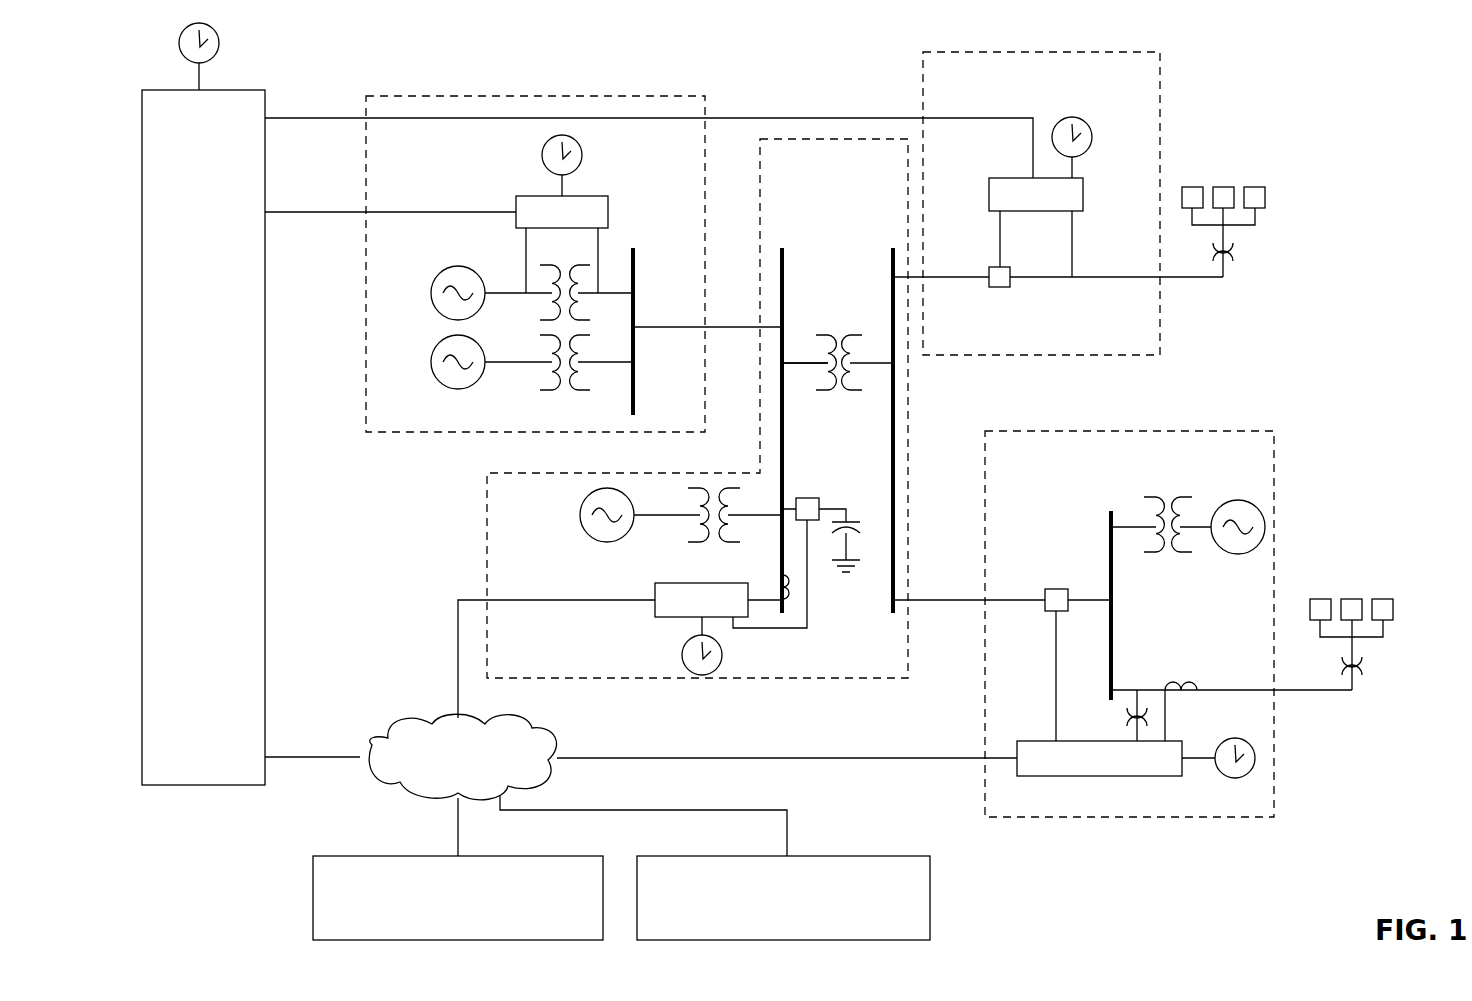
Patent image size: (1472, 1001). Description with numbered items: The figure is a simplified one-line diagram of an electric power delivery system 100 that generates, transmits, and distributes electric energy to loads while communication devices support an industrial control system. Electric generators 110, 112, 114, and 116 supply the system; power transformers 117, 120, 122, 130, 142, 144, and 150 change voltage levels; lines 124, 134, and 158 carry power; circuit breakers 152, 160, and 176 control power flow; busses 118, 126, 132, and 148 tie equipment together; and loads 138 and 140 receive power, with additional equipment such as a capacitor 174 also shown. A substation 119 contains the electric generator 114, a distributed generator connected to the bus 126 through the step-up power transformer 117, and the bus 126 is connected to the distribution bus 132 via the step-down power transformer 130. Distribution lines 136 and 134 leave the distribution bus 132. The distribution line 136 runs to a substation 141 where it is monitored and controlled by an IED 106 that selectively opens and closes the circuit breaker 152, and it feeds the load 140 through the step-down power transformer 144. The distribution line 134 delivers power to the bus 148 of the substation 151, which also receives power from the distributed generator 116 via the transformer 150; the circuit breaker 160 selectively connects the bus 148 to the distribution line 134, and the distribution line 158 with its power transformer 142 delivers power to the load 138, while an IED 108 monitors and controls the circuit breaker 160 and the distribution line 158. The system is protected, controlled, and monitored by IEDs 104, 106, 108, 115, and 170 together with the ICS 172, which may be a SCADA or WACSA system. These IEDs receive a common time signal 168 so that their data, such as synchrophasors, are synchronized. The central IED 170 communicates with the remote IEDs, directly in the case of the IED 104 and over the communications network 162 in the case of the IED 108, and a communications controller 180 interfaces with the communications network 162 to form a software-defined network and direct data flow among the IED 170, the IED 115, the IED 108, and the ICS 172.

The electric power delivery system 100 is at (1275, 109).
The IED 104 is at (527, 196).
The IED 106 is at (1003, 178).
The IED 108 is at (1135, 777).
The electric generator 110 is at (440, 272).
The electric generator 112 is at (440, 342).
The electric generator 114 is at (582, 517).
The IED 115 is at (701, 583).
The distributed generator 116 is at (1228, 554).
The power transformer 117 is at (698, 533).
The bus 118 is at (636, 402).
The substation 119 is at (556, 680).
The power transformer 120 is at (540, 312).
The power transformer 122 is at (562, 388).
The line 124 is at (720, 328).
The bus 126 is at (784, 387).
The power transformer 130 is at (834, 337).
The distribution bus 132 is at (891, 584).
The distribution line 134 is at (1000, 602).
The distribution line 136 is at (978, 278).
The load 138 is at (1340, 598).
The load 140 is at (1267, 197).
The substation 141 is at (1128, 357).
The power transformer 142 is at (1365, 668).
The power transformer 144 is at (1236, 248).
The bus 148 is at (1108, 511).
The transformer 150 is at (1164, 497).
The substation 151 is at (1222, 818).
The circuit breaker 152 is at (1008, 288).
The distribution line 158 is at (1170, 682).
The circuit breaker 160 is at (1052, 588).
The communications network 162 is at (417, 720).
The common time signal 168 is at (219, 48).
The central IED 170 is at (172, 90).
The ICS 172 is at (362, 855).
The capacitor 174 is at (848, 520).
The circuit breaker 176 is at (809, 497).
The communications controller 180 is at (682, 855).